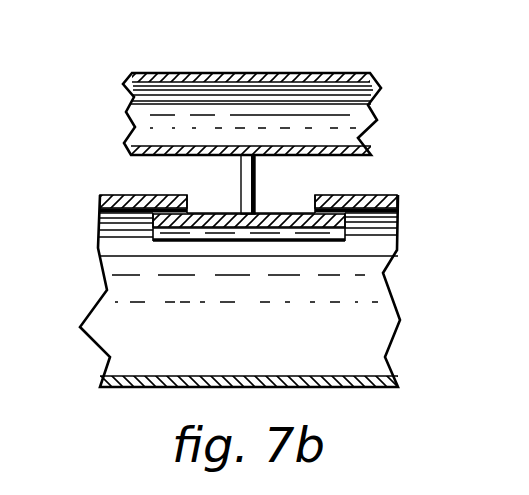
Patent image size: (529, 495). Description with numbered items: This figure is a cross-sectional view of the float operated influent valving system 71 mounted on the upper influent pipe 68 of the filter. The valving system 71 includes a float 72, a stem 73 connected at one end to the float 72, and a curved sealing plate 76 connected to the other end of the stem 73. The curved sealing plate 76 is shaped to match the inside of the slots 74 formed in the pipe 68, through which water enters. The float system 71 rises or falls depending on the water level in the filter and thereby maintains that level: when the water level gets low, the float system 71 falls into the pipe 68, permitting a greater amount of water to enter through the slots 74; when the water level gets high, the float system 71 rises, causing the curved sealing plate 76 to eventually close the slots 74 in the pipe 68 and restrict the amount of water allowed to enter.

The upper influent pipe 68 is at (360, 272).
The float operated influent valving system 71 is at (162, 178).
The float 72 is at (353, 105).
The stem 73 is at (236, 160).
The slots 74 is at (280, 197).
The curved sealing plate 76 is at (247, 242).